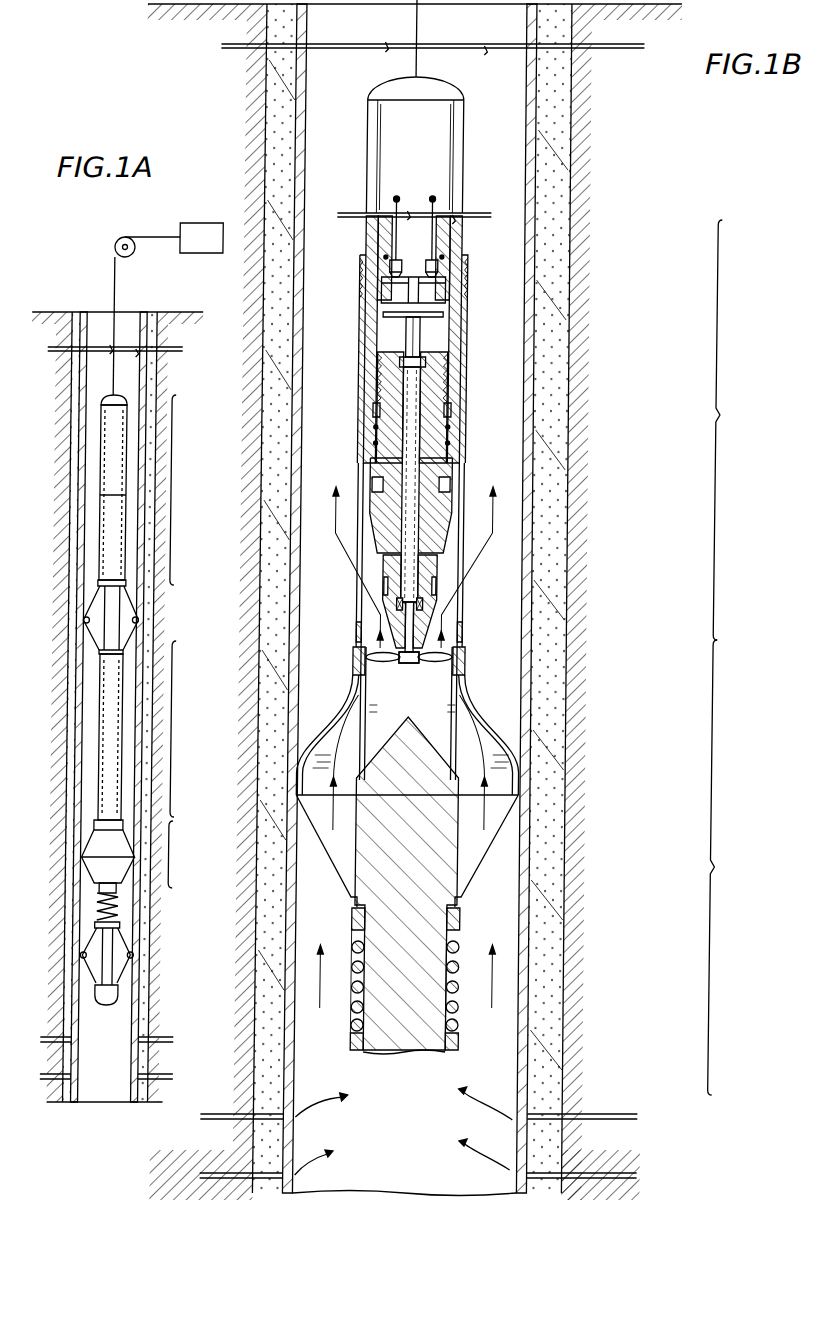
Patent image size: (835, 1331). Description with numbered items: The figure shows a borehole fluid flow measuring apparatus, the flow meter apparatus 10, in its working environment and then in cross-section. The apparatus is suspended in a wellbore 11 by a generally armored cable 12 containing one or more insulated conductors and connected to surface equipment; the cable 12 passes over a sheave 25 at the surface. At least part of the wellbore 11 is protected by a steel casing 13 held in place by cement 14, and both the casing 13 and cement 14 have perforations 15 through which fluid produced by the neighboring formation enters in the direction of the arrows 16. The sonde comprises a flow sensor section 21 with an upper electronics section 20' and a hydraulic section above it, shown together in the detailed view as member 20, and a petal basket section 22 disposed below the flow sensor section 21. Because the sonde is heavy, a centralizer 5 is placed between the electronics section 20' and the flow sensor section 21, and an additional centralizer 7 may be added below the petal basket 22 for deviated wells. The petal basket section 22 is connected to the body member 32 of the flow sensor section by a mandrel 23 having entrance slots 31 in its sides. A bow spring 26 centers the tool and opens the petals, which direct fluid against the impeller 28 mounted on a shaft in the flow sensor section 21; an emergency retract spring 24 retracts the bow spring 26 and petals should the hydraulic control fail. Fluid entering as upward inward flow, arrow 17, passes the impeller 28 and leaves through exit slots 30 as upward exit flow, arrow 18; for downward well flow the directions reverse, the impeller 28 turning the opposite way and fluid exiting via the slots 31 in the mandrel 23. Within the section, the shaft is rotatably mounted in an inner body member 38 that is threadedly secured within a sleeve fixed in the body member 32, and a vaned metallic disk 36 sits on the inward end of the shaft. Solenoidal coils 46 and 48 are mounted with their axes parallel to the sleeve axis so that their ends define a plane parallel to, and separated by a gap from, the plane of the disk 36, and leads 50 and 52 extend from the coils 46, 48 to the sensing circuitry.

In FIG. 1A, the centralizer 5 is at (66, 618).
In FIG. 1A, the additional centralizer 7 is at (60, 958).
In FIG. 1A, the flow meter apparatus 10 is at (133, 757).
In FIG. 1B, the flow meter apparatus 10 is at (471, 453).
In FIG. 1A, the wellbore 11 is at (163, 421).
In FIG. 1B, the wellbore 11 is at (273, 450).
In FIG. 1A, the cable 12 is at (116, 282).
In FIG. 1B, the cable 12 is at (421, 23).
In FIG. 1A, the steel casing 13 is at (150, 380).
In FIG. 1B, the steel casing 13 is at (537, 594).
In FIG. 1A, the cement 14 is at (159, 577).
In FIG. 1B, the cement 14 is at (555, 648).
In FIG. 1A, the perforations 15 is at (150, 1046).
In FIG. 1B, the perforations 15 is at (555, 1115).
In FIG. 1B, the arrows 16 is at (337, 1113).
In FIG. 1B, the arrow designating upward inward flow 17 is at (493, 817).
In FIG. 1B, the arrow designating upward exit flow 18 is at (477, 573).
In FIG. 1A, the member 20 is at (191, 490).
In FIG. 1B, the member 20 is at (505, 145).
In FIG. 1A, the upper electronics section 20' is at (66, 555).
In FIG. 1A, the flow sensor section 21 is at (180, 699).
In FIG. 1B, the flow sensor section 21 is at (731, 430).
In FIG. 1A, the petal basket section 22 is at (181, 856).
In FIG. 1B, the petal basket section 22 is at (725, 867).
In FIG. 1B, the mandrel 23 is at (441, 866).
In FIG. 1B, the emergency retract spring 24 is at (471, 977).
In FIG. 1A, the sheave 25 is at (118, 247).
In FIG. 1A, the bow spring 26 is at (214, 249).
In FIG. 1B, the bow spring 26 is at (492, 724).
In FIG. 1B, the impeller 28 is at (476, 664).
In FIG. 1B, the exit slots 30 is at (467, 555).
In FIG. 1B, the entrance slots 31 is at (353, 698).
In FIG. 1B, the body member 32 is at (470, 386).
In FIG. 1B, the vaned metallic disk 36 is at (424, 333).
In FIG. 1B, the inner body member 38 is at (445, 440).
In FIG. 1B, the solenoidal coil 46 is at (437, 293).
In FIG. 1B, the solenoidal coil 48 is at (393, 288).
In FIG. 1B, the lead 50 is at (435, 199).
In FIG. 1B, the lead 52 is at (399, 199).